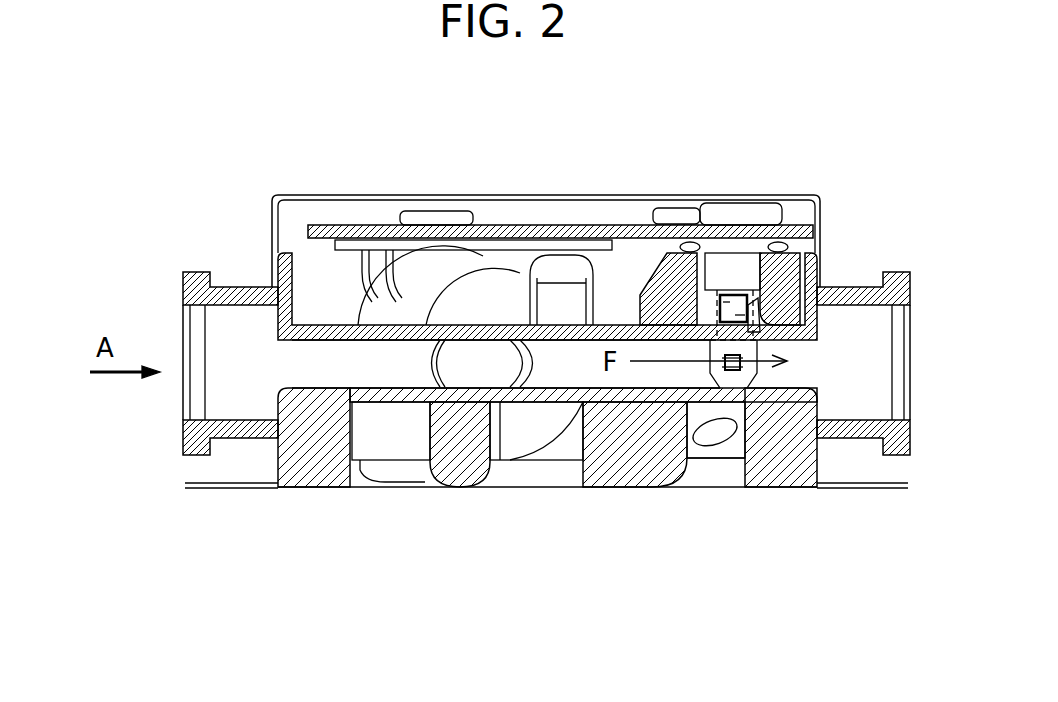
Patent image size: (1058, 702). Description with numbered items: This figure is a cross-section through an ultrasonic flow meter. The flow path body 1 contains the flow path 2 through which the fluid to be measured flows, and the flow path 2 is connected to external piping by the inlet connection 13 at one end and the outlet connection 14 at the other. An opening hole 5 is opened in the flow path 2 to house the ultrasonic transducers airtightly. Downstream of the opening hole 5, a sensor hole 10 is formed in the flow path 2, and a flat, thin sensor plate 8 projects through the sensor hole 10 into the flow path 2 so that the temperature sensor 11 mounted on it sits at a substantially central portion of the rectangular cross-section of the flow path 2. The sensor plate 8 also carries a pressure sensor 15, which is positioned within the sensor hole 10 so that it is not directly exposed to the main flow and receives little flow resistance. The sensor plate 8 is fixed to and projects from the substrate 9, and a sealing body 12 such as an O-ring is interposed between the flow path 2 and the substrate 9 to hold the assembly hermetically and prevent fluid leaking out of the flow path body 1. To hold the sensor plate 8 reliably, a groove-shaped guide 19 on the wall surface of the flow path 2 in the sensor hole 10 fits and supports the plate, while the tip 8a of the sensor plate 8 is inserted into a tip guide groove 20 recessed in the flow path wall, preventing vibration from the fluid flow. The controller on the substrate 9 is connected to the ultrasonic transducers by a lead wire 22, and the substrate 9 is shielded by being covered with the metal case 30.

The flow path body 1 is at (314, 466).
The flow path 2 is at (328, 363).
The opening hole 5 is at (482, 362).
The sensor plate 8 is at (720, 375).
The tip 8a is at (735, 377).
The substrate 9 is at (575, 230).
The sensor hole 10 is at (780, 287).
The temperature sensor 11 is at (735, 372).
The sealing body 12 is at (760, 318).
The inlet connection 13 is at (243, 338).
The outlet connection 14 is at (852, 335).
The pressure sensor 15 is at (733, 303).
The guide 19 is at (752, 318).
The tip guide groove 20 is at (740, 378).
The lead wire 22 is at (367, 290).
The metal case 30 is at (525, 198).